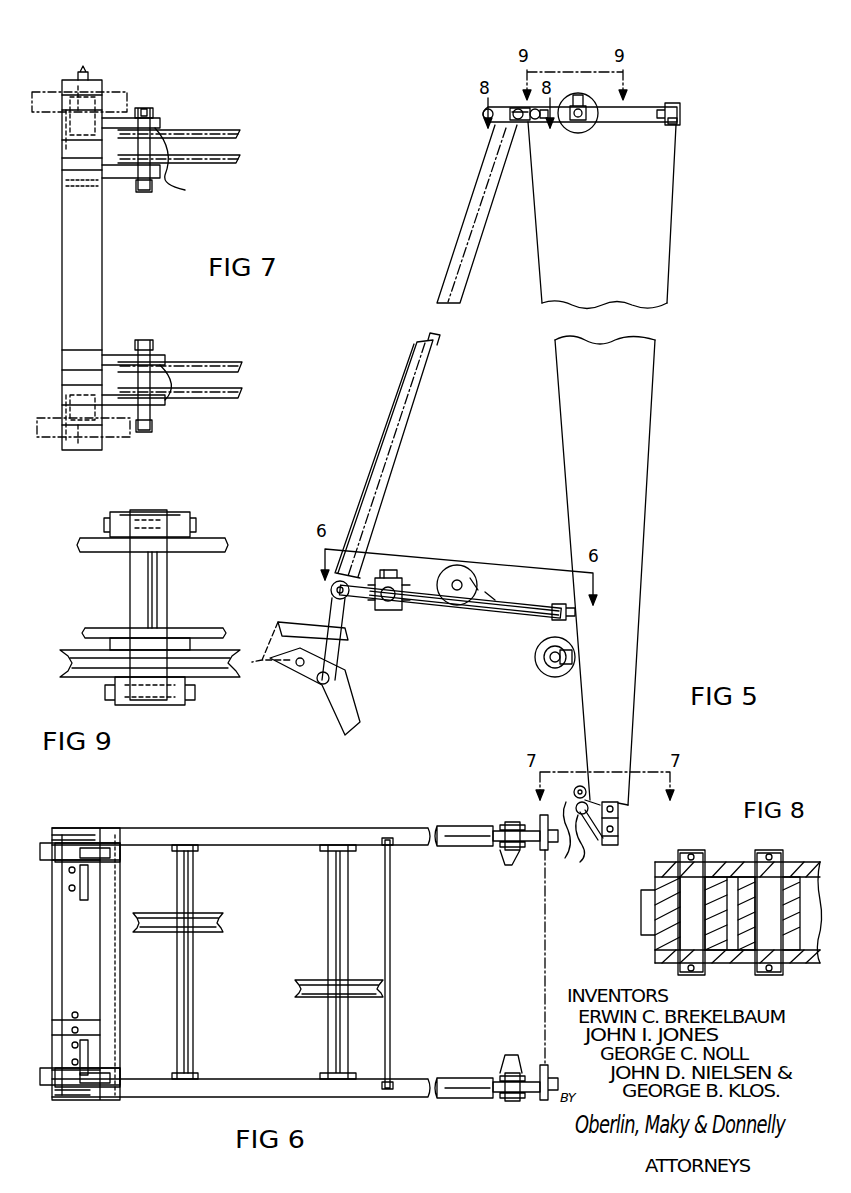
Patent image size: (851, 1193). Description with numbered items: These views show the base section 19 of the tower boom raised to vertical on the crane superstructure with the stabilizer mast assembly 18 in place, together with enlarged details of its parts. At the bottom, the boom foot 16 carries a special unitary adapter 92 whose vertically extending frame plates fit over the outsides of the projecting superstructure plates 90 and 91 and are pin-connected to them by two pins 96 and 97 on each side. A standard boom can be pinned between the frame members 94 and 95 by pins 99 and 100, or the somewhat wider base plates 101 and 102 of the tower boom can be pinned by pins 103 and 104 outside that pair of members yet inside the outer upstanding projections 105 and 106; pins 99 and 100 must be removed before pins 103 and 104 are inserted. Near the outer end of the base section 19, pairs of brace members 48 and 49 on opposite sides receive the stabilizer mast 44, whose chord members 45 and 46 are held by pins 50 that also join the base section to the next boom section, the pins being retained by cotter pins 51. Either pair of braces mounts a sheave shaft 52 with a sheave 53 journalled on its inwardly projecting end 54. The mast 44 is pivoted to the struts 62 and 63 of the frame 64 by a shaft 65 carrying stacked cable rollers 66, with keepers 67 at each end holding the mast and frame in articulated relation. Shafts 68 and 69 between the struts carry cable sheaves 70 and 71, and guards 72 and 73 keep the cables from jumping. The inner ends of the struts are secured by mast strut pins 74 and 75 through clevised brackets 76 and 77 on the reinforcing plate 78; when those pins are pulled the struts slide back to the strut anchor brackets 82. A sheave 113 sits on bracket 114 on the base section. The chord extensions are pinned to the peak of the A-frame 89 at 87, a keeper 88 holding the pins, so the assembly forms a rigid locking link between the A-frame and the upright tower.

In FIG. 5, the boom foot 16 is at (635, 832).
In FIG. 5, the stabilizer mast assembly 18 is at (332, 480).
In FIG. 5, the base section 19 is at (655, 422).
In FIG. 5, the stabilizer mast 44 is at (405, 385).
In FIG. 6, the chord member 45 is at (105, 838).
In FIG. 5, the chord member 46 is at (395, 452).
In FIG. 8, the chord member 46 is at (660, 940).
In FIG. 6, the chord member 46 is at (96, 1092).
In FIG. 9, the brace members 48 is at (200, 548).
In FIG. 5, the brace members 49 is at (640, 108).
In FIG. 8, the brace members 49 is at (792, 864).
In FIG. 5, the pins 50 is at (680, 108).
In FIG. 8, the pins 50 is at (752, 975).
In FIG. 5, the cotter pins 51 is at (680, 120).
In FIG. 9, the sheave shaft 52 is at (130, 587).
In FIG. 9, the sheave 53 is at (215, 672).
In FIG. 5, the sheave 53 is at (580, 130).
In FIG. 9, the inwardly projecting end 54 is at (165, 703).
In FIG. 6, the strut 62 is at (310, 828).
In FIG. 5, the strut 63 is at (522, 610).
In FIG. 6, the strut 63 is at (370, 1095).
In FIG. 5, the frame 64 is at (486, 625).
In FIG. 6, the frame 64 is at (412, 808).
In FIG. 5, the shaft 65 is at (343, 600).
In FIG. 6, the shaft 65 is at (78, 1095).
In FIG. 6, the cable rollers 66 is at (100, 972).
In FIG. 6, the keepers 67 is at (88, 828).
In FIG. 5, the shaft 68 is at (396, 580).
In FIG. 6, the shaft 68 is at (194, 1010).
In FIG. 5, the shaft 69 is at (470, 576).
In FIG. 6, the shaft 69 is at (328, 912).
In FIG. 5, the cable sheave 70 is at (390, 612).
In FIG. 6, the cable sheave 70 is at (212, 932).
In FIG. 5, the cable sheave 71 is at (456, 566).
In FIG. 6, the cable sheave 71 is at (300, 998).
In FIG. 5, the guard 72 is at (385, 575).
In FIG. 6, the guard 72 is at (192, 1055).
In FIG. 5, the guard 73 is at (488, 592).
In FIG. 6, the guard 73 is at (392, 1040).
In FIG. 6, the mast strut pin 74 is at (505, 855).
In FIG. 6, the mast strut pin 75 is at (510, 1058).
In FIG. 6, the clevised bracket 76 is at (538, 850).
In FIG. 5, the clevised bracket 77 is at (576, 616).
In FIG. 6, the clevised bracket 77 is at (540, 1100).
In FIG. 5, the reinforcing plate 78 is at (585, 748).
In FIG. 6, the reinforcing plate 78 is at (543, 975).
In FIG. 5, the strut anchor brackets 82 is at (586, 792).
In FIG. 5, the A-frame peak pin connection 87 is at (326, 622).
In FIG. 5, the keeper 88 is at (338, 636).
In FIG. 5, the A-frame 89 is at (332, 676).
In FIG. 7, the vertically extending plates 90 is at (245, 145).
In FIG. 5, the vertically extending plates 90 is at (582, 856).
In FIG. 7, the vertically extending plates 91 is at (245, 385).
In FIG. 7, the adapter 92 is at (108, 258).
In FIG. 7, the frame plate 94 is at (154, 156).
In FIG. 5, the frame plate 94 is at (566, 852).
In FIG. 7, the frame member 95 is at (165, 360).
In FIG. 7, the pin 96 is at (148, 190).
In FIG. 5, the pin 96 is at (583, 802).
In FIG. 7, the pin 97 is at (148, 420).
In FIG. 5, the pin 97 is at (598, 842).
In FIG. 7, the pin 99 is at (75, 147).
In FIG. 5, the pin 99 is at (619, 808).
In FIG. 7, the pin 100 is at (78, 378).
In FIG. 7, the base plate 101 is at (117, 98).
In FIG. 7, the base plate 102 is at (118, 432).
In FIG. 7, the pin 103 is at (80, 90).
In FIG. 5, the pin 103 is at (619, 822).
In FIG. 7, the pin 104 is at (85, 445).
In FIG. 7, the outer upstanding projection 105 is at (65, 78).
In FIG. 5, the outer upstanding projection 105 is at (619, 838).
In FIG. 7, the outer upstanding projection 106 is at (65, 442).
In FIG. 5, the sheave 113 is at (553, 677).
In FIG. 5, the bracket 114 is at (574, 656).